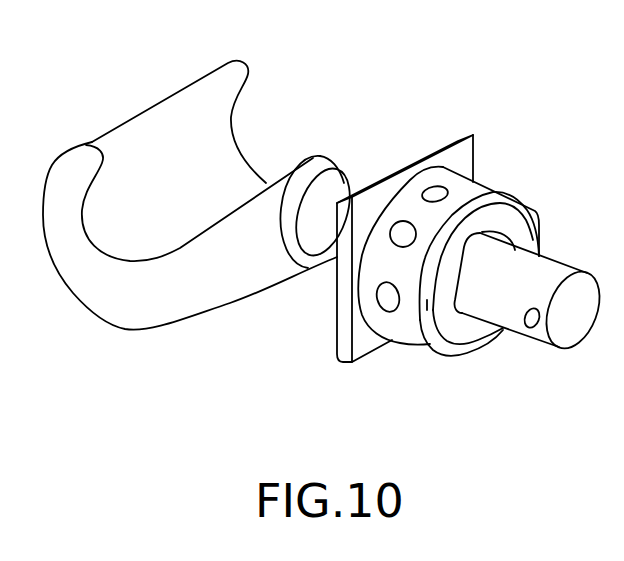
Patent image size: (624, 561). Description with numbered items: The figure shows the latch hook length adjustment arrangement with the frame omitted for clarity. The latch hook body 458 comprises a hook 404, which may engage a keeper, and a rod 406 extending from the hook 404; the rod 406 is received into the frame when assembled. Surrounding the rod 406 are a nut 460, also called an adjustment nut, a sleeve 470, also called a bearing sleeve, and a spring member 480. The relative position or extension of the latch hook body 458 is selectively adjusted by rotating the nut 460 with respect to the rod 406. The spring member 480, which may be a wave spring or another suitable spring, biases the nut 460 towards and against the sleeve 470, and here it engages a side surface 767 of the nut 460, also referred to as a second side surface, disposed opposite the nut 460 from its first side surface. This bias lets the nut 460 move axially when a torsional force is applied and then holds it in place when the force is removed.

The hook 404 is at (108, 310).
The latch hook body 458 is at (319, 158).
The sleeve 470 is at (455, 135).
The nut 460 is at (468, 190).
The spring member 480 is at (525, 227).
The side surface 767 is at (427, 310).
The rod 406 is at (543, 332).